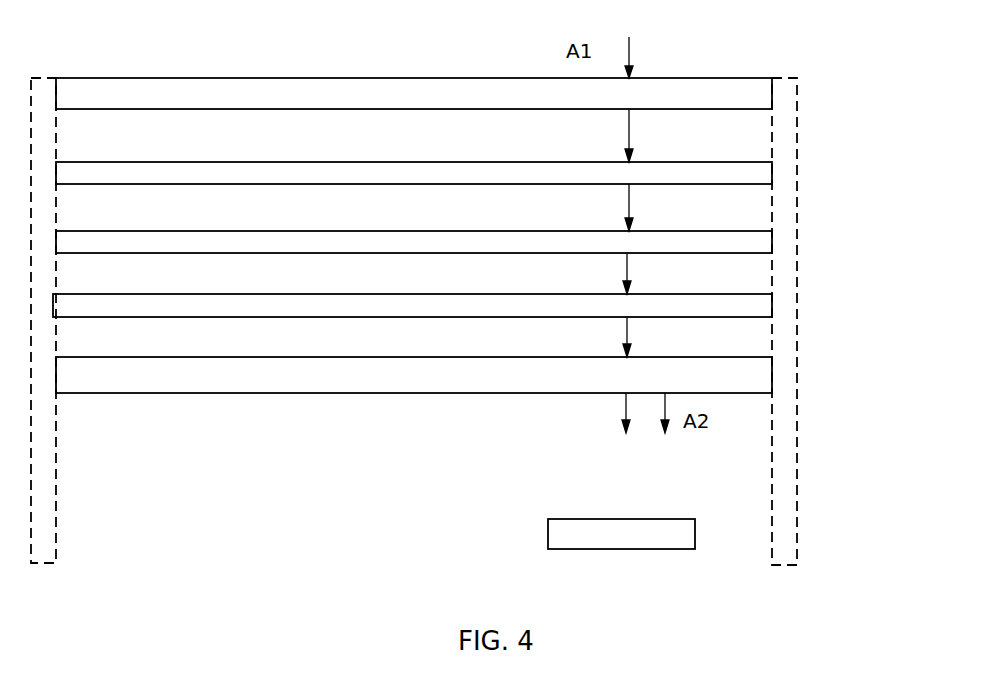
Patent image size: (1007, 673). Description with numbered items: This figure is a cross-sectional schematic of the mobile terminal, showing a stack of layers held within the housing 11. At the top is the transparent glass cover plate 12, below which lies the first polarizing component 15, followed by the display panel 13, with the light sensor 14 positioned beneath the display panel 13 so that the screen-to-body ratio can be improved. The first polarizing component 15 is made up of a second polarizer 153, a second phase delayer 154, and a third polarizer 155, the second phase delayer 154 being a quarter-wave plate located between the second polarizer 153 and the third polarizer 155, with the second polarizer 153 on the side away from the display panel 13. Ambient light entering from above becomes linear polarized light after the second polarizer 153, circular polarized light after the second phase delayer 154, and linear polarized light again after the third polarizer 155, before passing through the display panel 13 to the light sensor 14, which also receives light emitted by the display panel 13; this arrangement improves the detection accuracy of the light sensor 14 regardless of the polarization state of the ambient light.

The housing 11 is at (784, 474).
The transparent glass cover plate 12 is at (761, 95).
The display panel 13 is at (762, 382).
The light sensor 14 is at (695, 531).
The first polarizing component 15 is at (502, 240).
The second polarizer 153 is at (762, 178).
The second phase delayer 154 is at (762, 244).
The third polarizer 155 is at (480, 306).